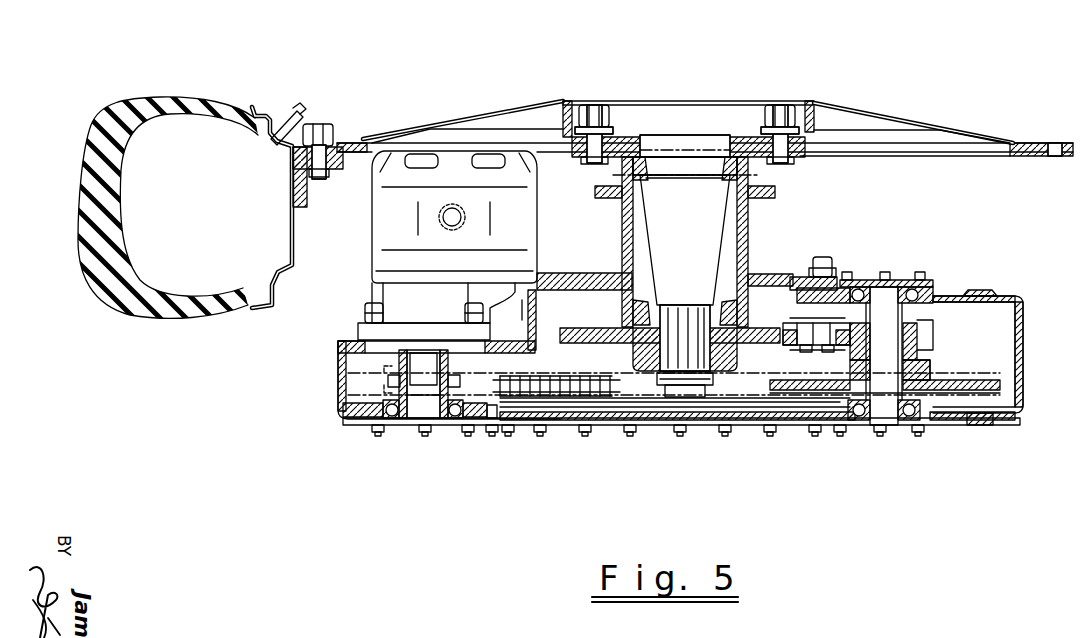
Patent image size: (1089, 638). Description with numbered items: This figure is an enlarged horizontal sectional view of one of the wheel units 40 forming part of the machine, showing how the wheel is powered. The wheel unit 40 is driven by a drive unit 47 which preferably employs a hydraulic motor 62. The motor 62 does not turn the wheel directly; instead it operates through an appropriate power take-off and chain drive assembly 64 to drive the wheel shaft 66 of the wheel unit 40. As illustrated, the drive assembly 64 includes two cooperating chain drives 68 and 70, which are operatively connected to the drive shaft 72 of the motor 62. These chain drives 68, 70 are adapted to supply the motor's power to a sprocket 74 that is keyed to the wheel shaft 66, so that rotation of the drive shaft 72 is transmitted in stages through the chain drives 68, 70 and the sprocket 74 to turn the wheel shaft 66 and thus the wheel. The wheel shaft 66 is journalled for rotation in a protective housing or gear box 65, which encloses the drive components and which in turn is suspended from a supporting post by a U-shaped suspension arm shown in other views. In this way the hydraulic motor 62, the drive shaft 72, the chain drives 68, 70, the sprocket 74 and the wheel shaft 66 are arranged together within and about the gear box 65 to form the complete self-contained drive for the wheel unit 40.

The wheel unit 40 is at (165, 40).
The drive unit 47 is at (405, 452).
The hydraulic motor 62 is at (530, 226).
The chain drive assembly 64 is at (542, 410).
The gear box 65 is at (945, 430).
The wheel shaft 66 is at (700, 223).
The chain drive 68 is at (545, 380).
The chain drive 70 is at (828, 328).
The drive shaft 72 is at (418, 365).
The sprocket 74 is at (728, 355).